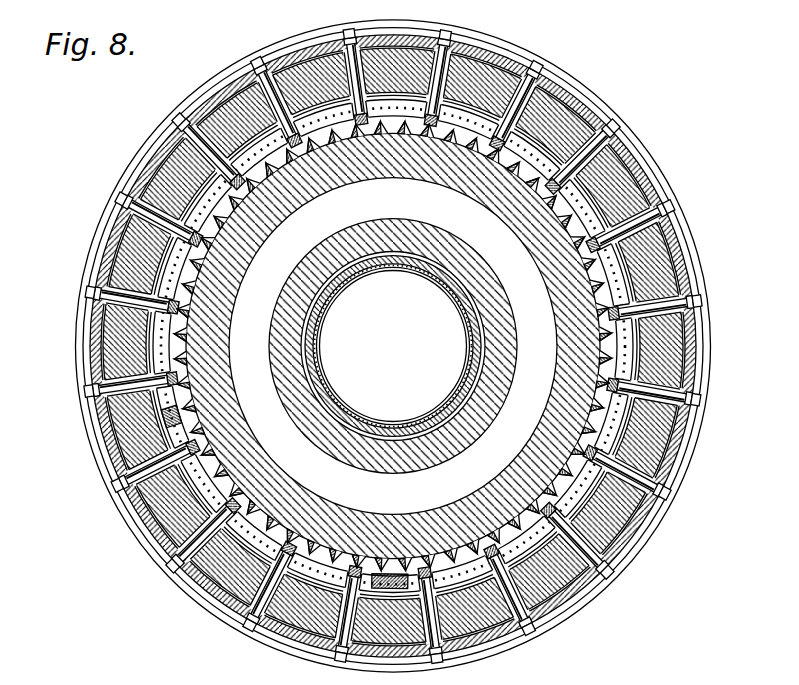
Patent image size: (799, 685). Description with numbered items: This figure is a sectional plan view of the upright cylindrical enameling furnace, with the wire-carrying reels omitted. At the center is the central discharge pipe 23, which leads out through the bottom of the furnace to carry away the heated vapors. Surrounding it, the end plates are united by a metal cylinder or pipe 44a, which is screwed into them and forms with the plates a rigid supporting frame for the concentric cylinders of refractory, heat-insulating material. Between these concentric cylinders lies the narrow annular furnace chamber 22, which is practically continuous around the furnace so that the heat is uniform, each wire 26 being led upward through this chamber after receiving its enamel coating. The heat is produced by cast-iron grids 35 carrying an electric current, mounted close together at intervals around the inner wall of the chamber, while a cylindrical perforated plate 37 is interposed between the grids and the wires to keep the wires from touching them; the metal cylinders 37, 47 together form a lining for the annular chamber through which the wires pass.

The annular furnace chamber 22 is at (565, 193).
The central discharge pipe 23 is at (322, 317).
The wire 26 is at (170, 408).
The cast-iron grids 35 is at (414, 128).
The cylindrical perforated plate 37 is at (170, 362).
The metal cylinder or pipe 44a is at (297, 322).
The metal cylinder 47 is at (167, 329).